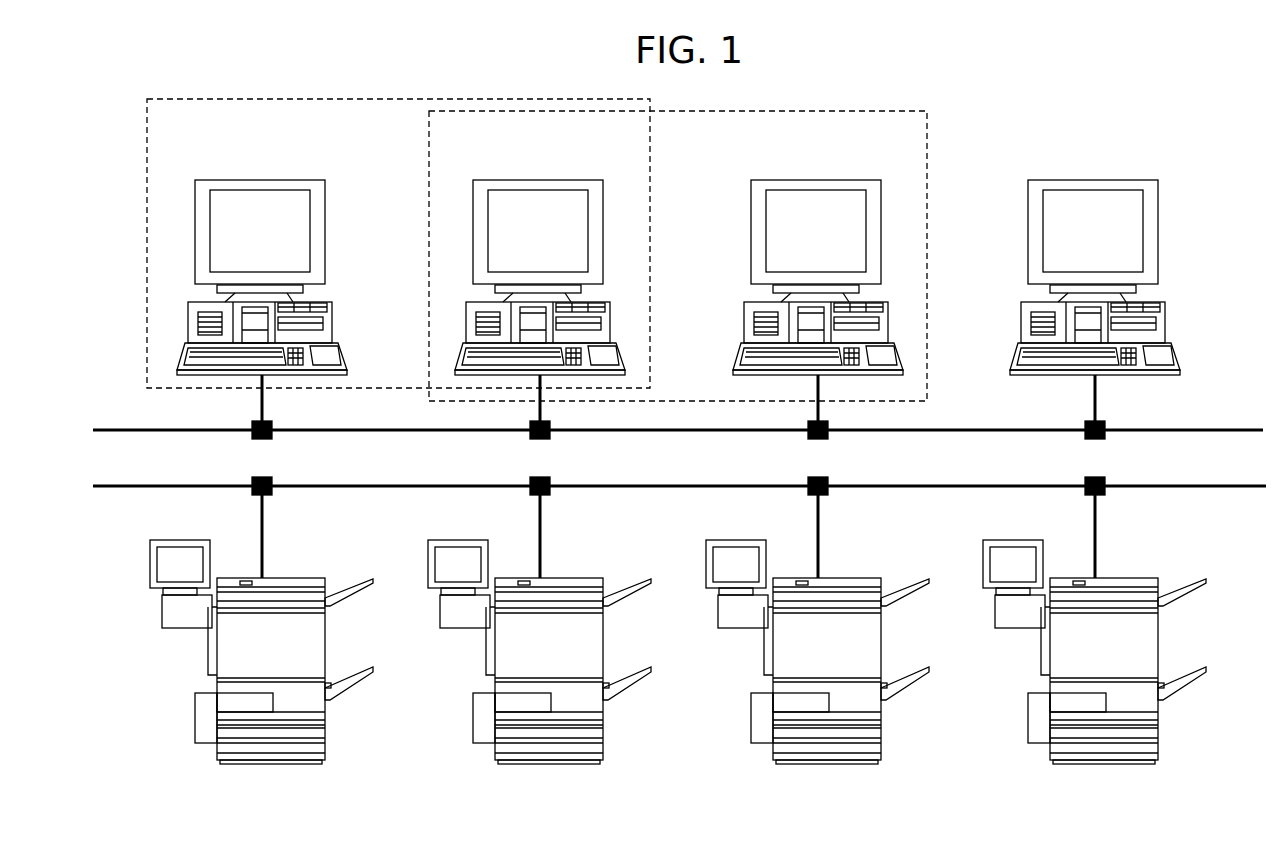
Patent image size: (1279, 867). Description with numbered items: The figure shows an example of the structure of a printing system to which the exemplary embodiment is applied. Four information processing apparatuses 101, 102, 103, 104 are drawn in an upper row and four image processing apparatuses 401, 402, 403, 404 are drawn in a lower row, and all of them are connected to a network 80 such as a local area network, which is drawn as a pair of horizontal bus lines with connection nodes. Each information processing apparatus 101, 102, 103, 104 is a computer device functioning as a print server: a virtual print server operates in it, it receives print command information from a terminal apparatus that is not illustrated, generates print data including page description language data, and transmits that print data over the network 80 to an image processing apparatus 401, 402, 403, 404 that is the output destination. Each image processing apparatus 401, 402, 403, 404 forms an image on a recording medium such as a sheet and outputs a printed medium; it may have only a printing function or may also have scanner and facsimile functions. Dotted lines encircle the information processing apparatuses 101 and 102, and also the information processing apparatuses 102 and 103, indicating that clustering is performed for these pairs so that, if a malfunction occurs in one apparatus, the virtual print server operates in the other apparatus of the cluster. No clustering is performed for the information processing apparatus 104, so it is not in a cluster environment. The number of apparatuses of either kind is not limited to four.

The information processing apparatus 101 is at (277, 180).
The information processing apparatus 102 is at (540, 286).
The information processing apparatus 103 is at (818, 286).
The information processing apparatus 104 is at (1095, 286).
The image processing apparatus 401 is at (277, 578).
The image processing apparatus 402 is at (539, 625).
The image processing apparatus 403 is at (817, 625).
The image processing apparatus 404 is at (1094, 625).
The network 80 is at (1213, 428).